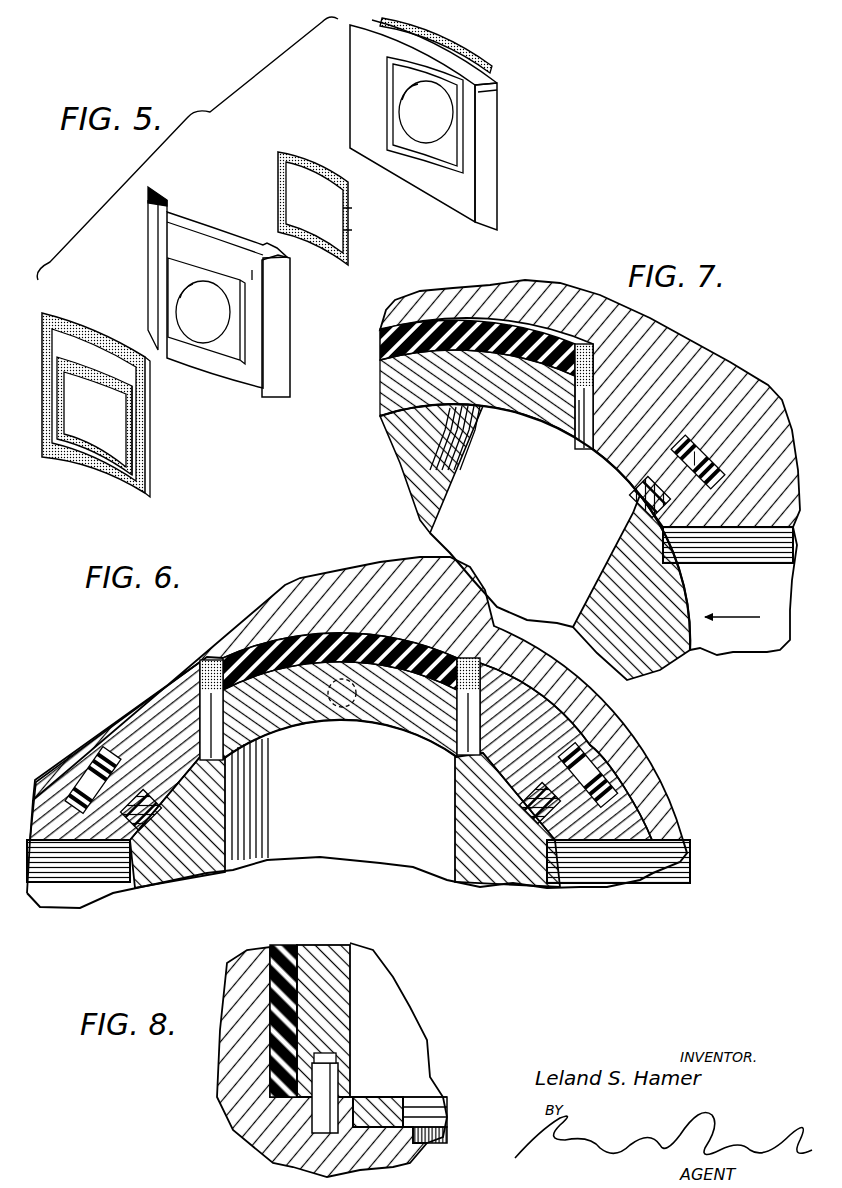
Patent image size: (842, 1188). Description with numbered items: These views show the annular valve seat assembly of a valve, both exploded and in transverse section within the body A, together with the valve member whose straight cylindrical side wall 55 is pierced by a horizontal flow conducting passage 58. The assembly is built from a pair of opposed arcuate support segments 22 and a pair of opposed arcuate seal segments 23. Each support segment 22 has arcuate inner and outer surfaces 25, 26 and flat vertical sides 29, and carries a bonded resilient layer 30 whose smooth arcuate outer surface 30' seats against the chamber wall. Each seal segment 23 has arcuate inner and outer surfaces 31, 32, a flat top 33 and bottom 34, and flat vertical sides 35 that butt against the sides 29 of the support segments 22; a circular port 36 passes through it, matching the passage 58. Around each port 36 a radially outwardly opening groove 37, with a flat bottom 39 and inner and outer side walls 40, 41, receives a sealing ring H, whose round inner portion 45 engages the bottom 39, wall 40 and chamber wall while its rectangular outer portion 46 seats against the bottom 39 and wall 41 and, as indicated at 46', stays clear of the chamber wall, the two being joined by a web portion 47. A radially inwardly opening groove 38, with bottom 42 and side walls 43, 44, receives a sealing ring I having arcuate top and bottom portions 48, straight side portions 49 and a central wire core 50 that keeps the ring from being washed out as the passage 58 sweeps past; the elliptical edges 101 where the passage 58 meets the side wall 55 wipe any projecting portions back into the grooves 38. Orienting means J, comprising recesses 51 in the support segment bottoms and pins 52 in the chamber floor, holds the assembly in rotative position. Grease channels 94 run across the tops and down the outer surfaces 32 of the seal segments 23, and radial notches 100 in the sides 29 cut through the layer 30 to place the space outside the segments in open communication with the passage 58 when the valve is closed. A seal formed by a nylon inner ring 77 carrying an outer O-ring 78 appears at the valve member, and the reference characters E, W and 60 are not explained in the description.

In FIG. 7, the support segment 22 is at (590, 403).
In FIG. 6, the support segment 22 is at (325, 600).
In FIG. 8, the support segment 22 is at (355, 1013).
In FIG. 5, the seal segment 23 is at (209, 232).
In FIG. 7, the seal segment 23 is at (660, 397).
In FIG. 6, the seal segment 23 is at (150, 720).
In FIG. 6, the inner surface 25 is at (240, 775).
In FIG. 6, the outer surface 26 is at (338, 655).
In FIG. 6, the side 29 is at (180, 657).
In FIG. 7, the layer of resilient material 30 is at (477, 317).
In FIG. 6, the layer of resilient material 30 is at (347, 639).
In FIG. 8, the layer of resilient material 30 is at (233, 1021).
In FIG. 7, the outer surface of layer 30' is at (455, 292).
In FIG. 6, the outer surface of layer 30' is at (409, 607).
In FIG. 5, the inner surface 31 is at (425, 55).
In FIG. 7, the inner surface 31 is at (597, 473).
In FIG. 6, the inner surface 31 is at (200, 783).
In FIG. 5, the outer surface 32 is at (279, 332).
In FIG. 7, the outer surface 32 is at (647, 343).
In FIG. 6, the outer surface 32 is at (55, 800).
In FIG. 5, the top 33 is at (486, 80).
In FIG. 5, the bottom 34 is at (275, 397).
In FIG. 5, the side 35 is at (484, 140).
In FIG. 7, the side 35 is at (580, 440).
In FIG. 6, the side 35 is at (232, 705).
In FIG. 5, the port 36 is at (206, 332).
In FIG. 7, the port 36 is at (713, 530).
In FIG. 6, the port 36 is at (73, 860).
In FIG. 5, the seal receiving groove 37 is at (255, 303).
In FIG. 7, the seal receiving groove 37 is at (682, 462).
In FIG. 6, the seal receiving groove 37 is at (107, 783).
In FIG. 5, the seal receiving groove 38 is at (458, 118).
In FIG. 7, the seal receiving groove 38 is at (633, 500).
In FIG. 6, the seal receiving groove 38 is at (527, 810).
In FIG. 5, the bottom 39 is at (252, 275).
In FIG. 7, the bottom 39 is at (740, 462).
In FIG. 5, the inner peripheral side wall 40 is at (243, 350).
In FIG. 7, the inner peripheral side wall 40 is at (727, 478).
In FIG. 5, the outer peripheral side wall 41 is at (160, 254).
In FIG. 7, the outer peripheral side wall 41 is at (752, 412).
In FIG. 7, the bottom 42 is at (733, 527).
In FIG. 6, the bottom 42 is at (640, 840).
In FIG. 7, the inner side wall 43 is at (640, 518).
In FIG. 6, the inner side wall 43 is at (547, 830).
In FIG. 7, the outer side wall 44 is at (632, 496).
In FIG. 6, the outer side wall 44 is at (160, 838).
In FIG. 5, the round inner portion 45 is at (122, 406).
In FIG. 6, the round inner portion 45 is at (83, 860).
In FIG. 5, the rectangular outer portion 46 is at (132, 420).
In FIG. 7, the clearance of outer portion 46' is at (779, 383).
In FIG. 6, the clearance of outer portion 46' is at (347, 711).
In FIG. 5, the web portion 47 is at (134, 406).
In FIG. 7, the web portion 47 is at (745, 438).
In FIG. 6, the web portion 47 is at (80, 855).
In FIG. 5, the top and bottom portions 48 is at (335, 178).
In FIG. 5, the side portions 49 is at (343, 204).
In FIG. 7, the side portions 49 is at (634, 508).
In FIG. 6, the side portions 49 is at (537, 827).
In FIG. 5, the wire core 50 is at (350, 219).
In FIG. 6, the wire core 50 is at (523, 817).
In FIG. 8, the recess 51 is at (343, 1057).
In FIG. 8, the pin 52 is at (328, 1070).
In FIG. 8, the side wall 55 is at (400, 1037).
In FIG. 7, the flow conducting passage 58 is at (458, 470).
In FIG. 6, the flow conducting passage 58 is at (253, 868).
In FIG. 8, the washer 60 is at (423, 1143).
In FIG. 8, the inner ring 77 is at (405, 1110).
In FIG. 8, the outer O-ring 78 is at (412, 1123).
In FIG. 5, the grease channel 94 is at (165, 197).
In FIG. 6, the grease channel 94 is at (163, 713).
In FIG. 7, the notch 100 is at (578, 432).
In FIG. 6, the notch 100 is at (235, 720).
In FIG. 7, the elliptical edge 101 is at (640, 520).
In FIG. 6, the elliptical edge 101 is at (460, 762).
In FIG. 8, the body A is at (230, 1088).
In FIG. 8, the section E is at (382, 1090).
In FIG. 5, the sealing ring H is at (152, 437).
In FIG. 6, the sealing ring H is at (617, 773).
In FIG. 5, the sealing ring I is at (312, 152).
In FIG. 6, the sealing ring I is at (150, 830).
In FIG. 6, the orienting means J is at (343, 708).
In FIG. 8, the orienting means J is at (325, 1080).
In FIG. 6, the direction W is at (630, 908).